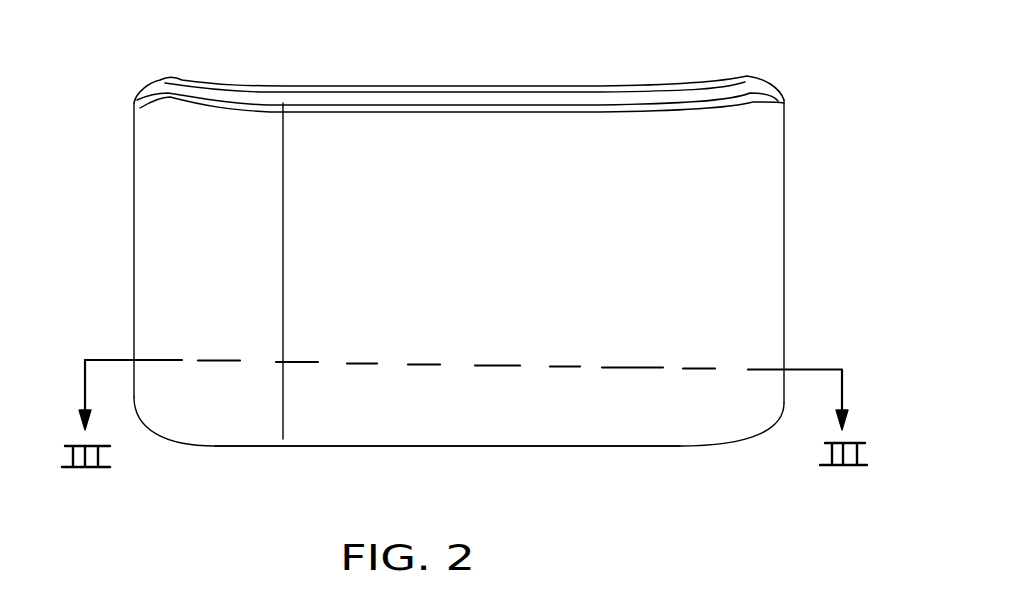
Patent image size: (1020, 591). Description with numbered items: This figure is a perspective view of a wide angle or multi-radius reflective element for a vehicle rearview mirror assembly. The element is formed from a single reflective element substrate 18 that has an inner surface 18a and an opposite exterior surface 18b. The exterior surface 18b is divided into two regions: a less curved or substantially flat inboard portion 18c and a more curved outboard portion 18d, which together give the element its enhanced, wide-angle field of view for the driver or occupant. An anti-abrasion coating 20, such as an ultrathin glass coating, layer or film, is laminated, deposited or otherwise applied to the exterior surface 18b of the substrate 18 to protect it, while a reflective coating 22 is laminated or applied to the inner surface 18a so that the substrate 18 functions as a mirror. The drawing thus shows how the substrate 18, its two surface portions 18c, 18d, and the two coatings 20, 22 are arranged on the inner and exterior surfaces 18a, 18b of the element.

The reflective element substrate 18 is at (72, 108).
The inner surface 18a is at (478, 88).
The exterior surface 18b is at (482, 404).
The inboard portion 18c is at (728, 245).
The outboard portion 18d is at (187, 297).
The anti-abrasion coating 20 is at (750, 123).
The reflective coating 22 is at (690, 77).